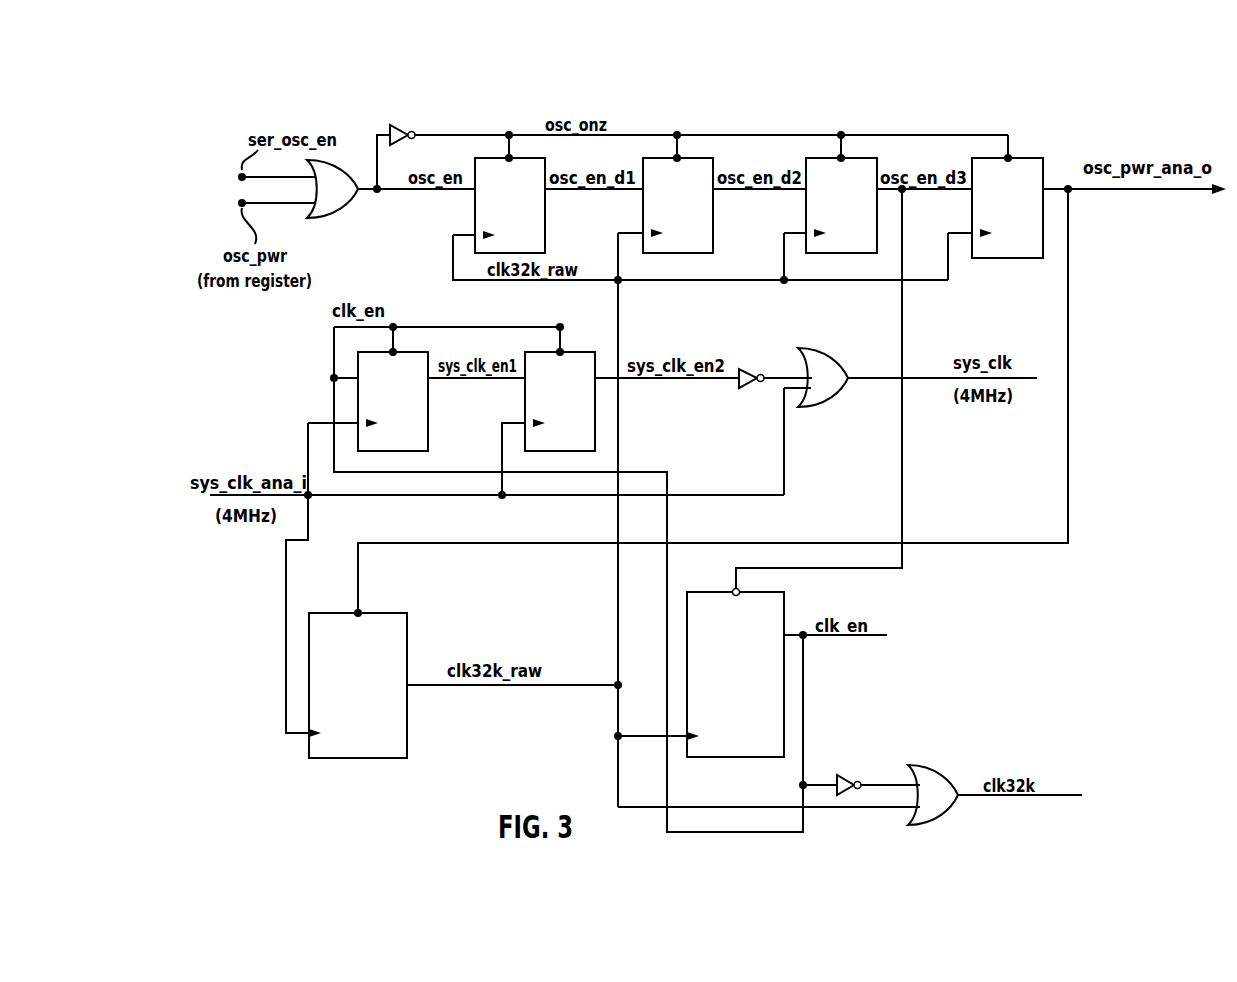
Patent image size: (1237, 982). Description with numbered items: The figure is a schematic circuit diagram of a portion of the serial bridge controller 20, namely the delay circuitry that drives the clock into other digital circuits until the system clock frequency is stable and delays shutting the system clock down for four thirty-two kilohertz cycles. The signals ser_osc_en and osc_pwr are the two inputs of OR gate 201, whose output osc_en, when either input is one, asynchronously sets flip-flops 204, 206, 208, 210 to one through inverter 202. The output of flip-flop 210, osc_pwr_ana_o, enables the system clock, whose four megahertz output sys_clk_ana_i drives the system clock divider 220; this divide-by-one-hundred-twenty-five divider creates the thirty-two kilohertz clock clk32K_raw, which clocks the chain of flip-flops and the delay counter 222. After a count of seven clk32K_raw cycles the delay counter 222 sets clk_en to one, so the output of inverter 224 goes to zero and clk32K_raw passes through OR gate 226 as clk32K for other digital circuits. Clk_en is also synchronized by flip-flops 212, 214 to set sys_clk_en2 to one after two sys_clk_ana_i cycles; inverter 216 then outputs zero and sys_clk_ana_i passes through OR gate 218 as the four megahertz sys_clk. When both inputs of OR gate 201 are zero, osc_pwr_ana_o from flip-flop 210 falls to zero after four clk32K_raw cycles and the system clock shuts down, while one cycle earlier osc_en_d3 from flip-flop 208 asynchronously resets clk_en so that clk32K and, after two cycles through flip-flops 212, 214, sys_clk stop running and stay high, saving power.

The serial bridge controller 20 is at (332, 70).
The OR gate 201 is at (338, 200).
The inverter 202 is at (398, 146).
The flip-flop 204 is at (547, 221).
The flip-flop 206 is at (714, 219).
The flip-flop 208 is at (878, 222).
The flip-flop 210 is at (1030, 157).
The synchronization flip-flop 212 is at (410, 352).
The synchronization flip-flop 214 is at (570, 352).
The inverter 216 is at (744, 368).
The OR gate 218 is at (850, 340).
The system clock divider 220 is at (377, 612).
The delay counter 222 is at (770, 590).
The inverter 224 is at (843, 775).
The OR gate 226 is at (943, 767).